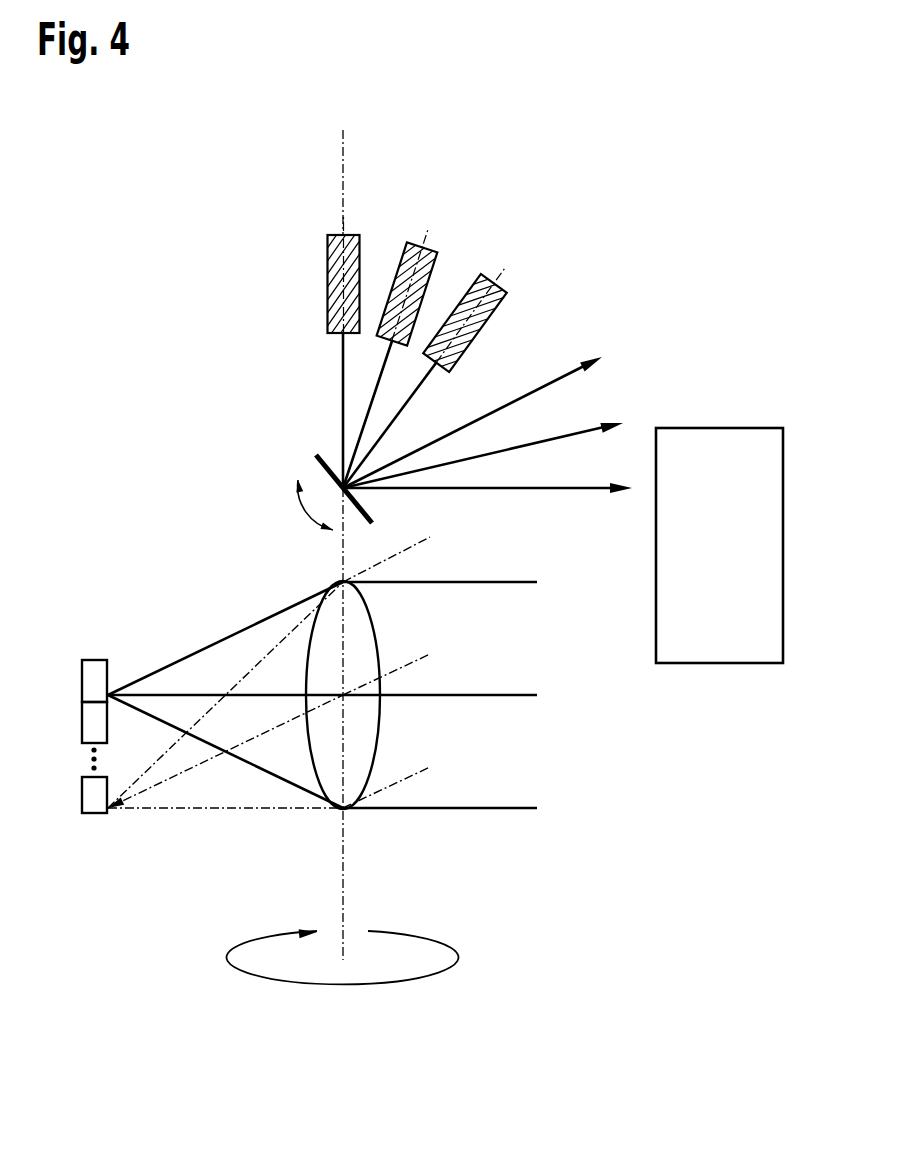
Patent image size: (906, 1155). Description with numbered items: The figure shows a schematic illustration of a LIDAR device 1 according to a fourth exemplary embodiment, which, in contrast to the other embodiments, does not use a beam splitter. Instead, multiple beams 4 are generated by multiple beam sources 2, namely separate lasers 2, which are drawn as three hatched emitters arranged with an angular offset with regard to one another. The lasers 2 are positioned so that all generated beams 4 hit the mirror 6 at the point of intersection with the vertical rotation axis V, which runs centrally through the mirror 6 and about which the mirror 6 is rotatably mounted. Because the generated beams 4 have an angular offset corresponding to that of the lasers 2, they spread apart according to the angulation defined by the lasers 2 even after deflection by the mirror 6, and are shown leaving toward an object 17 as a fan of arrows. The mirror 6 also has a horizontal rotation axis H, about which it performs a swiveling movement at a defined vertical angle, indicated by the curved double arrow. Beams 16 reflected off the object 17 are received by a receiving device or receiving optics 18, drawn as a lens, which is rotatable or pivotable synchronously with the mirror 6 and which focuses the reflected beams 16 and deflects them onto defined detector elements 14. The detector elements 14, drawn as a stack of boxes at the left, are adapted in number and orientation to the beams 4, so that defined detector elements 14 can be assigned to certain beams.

The LIDAR device 1 is at (160, 225).
The beam source 2 is at (328, 262).
The electromagnetic beam 4 is at (343, 378).
The mirror 6 is at (315, 461).
The detector elements 14 is at (93, 838).
The reflected beams 16 is at (515, 583).
The object 17 is at (717, 663).
The receiving optics 18 is at (380, 728).
The vertical rotation axis V is at (343, 170).
The horizontal rotation axis H is at (290, 522).